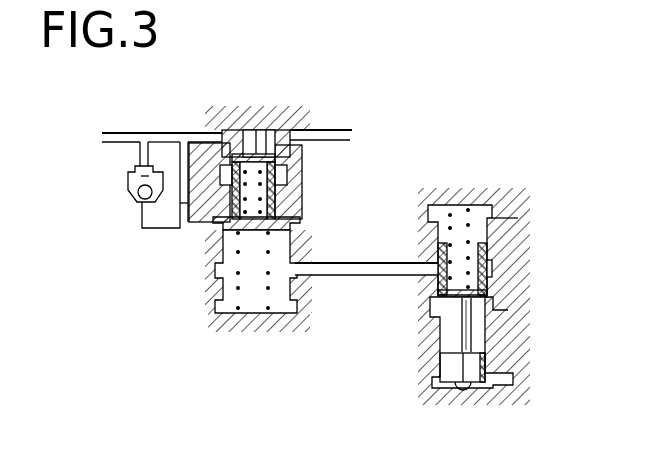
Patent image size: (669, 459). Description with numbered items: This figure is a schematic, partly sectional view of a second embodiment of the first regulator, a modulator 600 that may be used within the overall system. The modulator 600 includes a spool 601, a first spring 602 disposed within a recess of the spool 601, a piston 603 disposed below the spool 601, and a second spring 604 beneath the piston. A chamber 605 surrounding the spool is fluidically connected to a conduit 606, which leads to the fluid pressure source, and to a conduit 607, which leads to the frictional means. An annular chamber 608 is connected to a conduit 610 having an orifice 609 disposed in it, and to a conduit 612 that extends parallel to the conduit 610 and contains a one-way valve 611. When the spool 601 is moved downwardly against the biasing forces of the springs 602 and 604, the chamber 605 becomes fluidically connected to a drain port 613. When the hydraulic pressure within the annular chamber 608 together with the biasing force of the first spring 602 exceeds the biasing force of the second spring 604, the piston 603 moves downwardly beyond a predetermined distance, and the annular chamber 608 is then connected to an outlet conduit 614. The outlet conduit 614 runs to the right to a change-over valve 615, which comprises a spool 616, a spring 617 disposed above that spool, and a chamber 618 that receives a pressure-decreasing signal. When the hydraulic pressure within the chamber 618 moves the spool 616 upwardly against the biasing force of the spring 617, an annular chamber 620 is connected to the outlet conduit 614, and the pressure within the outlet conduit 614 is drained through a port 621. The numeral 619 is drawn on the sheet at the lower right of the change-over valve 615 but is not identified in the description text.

The modulator 600 is at (211, 103).
The spool 601 is at (261, 142).
The first spring 602 is at (243, 152).
The piston 603 is at (280, 218).
The second spring 604 is at (272, 288).
The chamber 605 is at (292, 134).
The conduit 606 is at (351, 132).
The conduit 607 is at (146, 152).
The annular chamber 608 is at (291, 228).
The orifice 609 is at (184, 204).
The conduit 610 is at (182, 190).
The one-way valve 611 is at (128, 187).
The conduit 612 is at (140, 150).
The drain port 613 is at (287, 173).
The outlet conduit 614 is at (356, 265).
The change-over valve 615 is at (513, 205).
The spool 616 is at (470, 367).
The spring 617 is at (455, 216).
The chamber 618 is at (446, 386).
The outlet port 619 is at (508, 386).
The annular chamber 620 is at (476, 332).
The port 621 is at (480, 303).